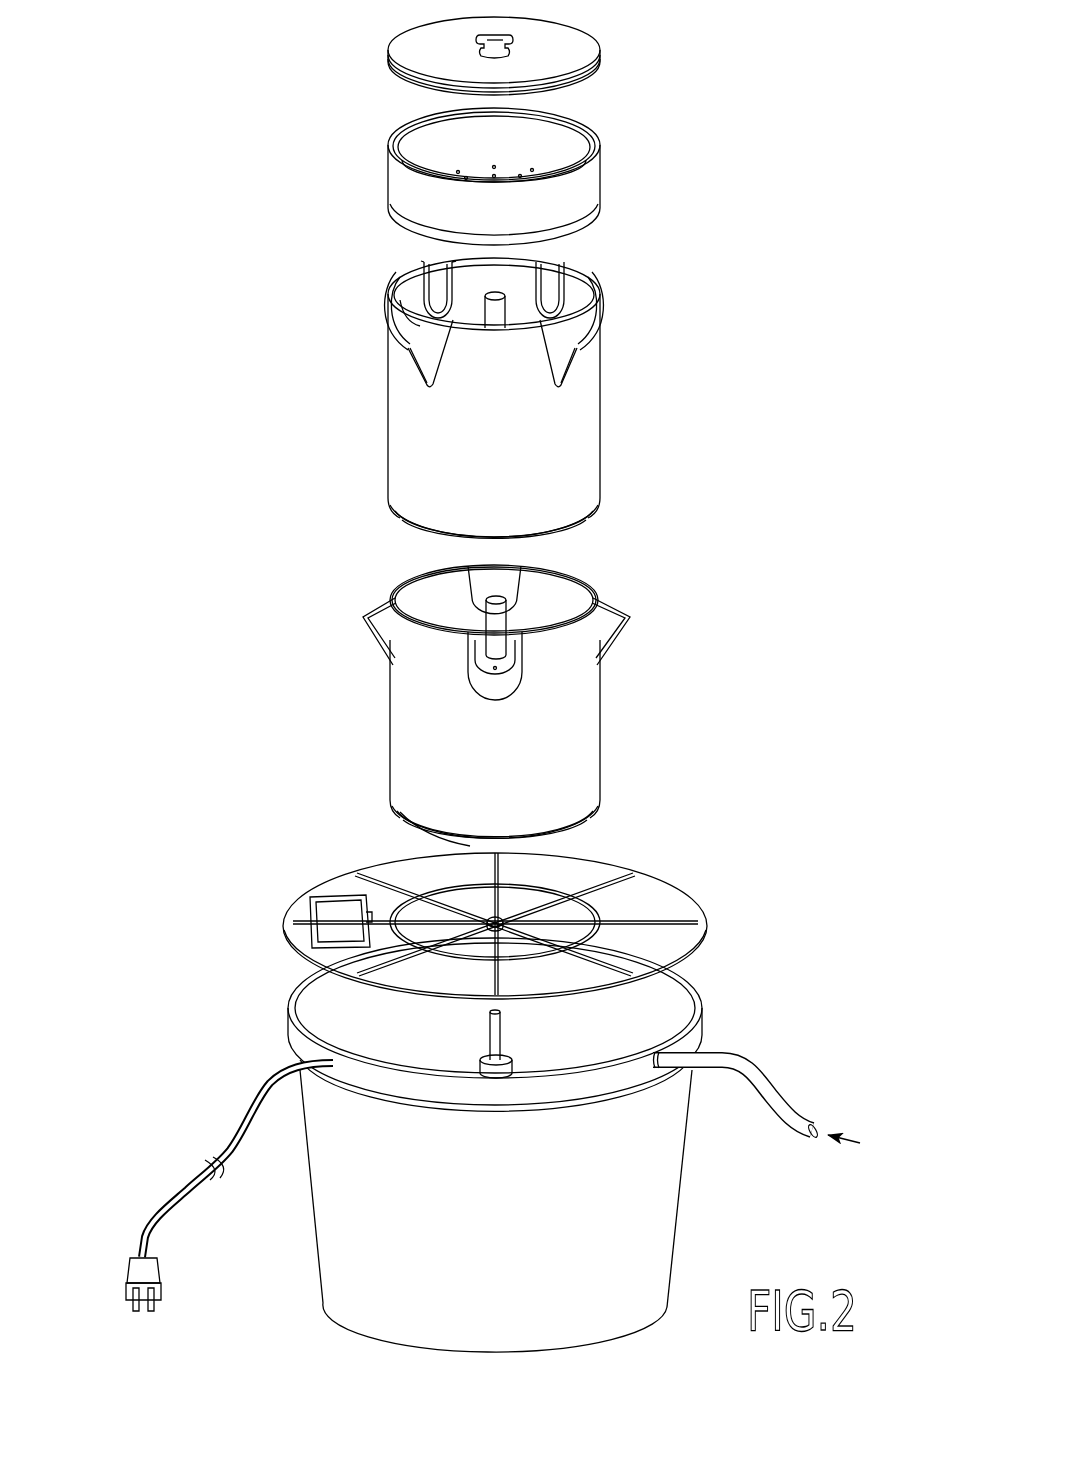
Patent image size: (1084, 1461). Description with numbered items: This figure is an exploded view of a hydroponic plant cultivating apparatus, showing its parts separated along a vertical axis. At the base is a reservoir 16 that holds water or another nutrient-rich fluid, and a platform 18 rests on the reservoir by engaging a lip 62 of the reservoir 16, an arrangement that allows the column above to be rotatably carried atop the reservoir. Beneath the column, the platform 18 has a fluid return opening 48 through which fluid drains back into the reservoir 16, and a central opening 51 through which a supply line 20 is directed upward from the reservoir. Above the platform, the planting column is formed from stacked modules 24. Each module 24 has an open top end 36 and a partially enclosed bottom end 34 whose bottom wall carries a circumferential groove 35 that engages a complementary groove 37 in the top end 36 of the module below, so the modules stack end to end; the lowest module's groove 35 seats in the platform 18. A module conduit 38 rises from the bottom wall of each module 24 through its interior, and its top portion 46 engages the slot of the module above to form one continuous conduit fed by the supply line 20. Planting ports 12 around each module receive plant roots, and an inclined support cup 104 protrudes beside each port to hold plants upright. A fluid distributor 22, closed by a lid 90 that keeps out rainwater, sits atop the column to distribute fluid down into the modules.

The planting port 12 is at (428, 328).
The reservoir 16 is at (627, 1182).
The platform 18 is at (690, 897).
The supply line 20 is at (502, 1043).
The fluid distributor 22 is at (598, 188).
The module 24 is at (588, 425).
The bottom end 34 is at (413, 818).
The circumferential groove 35 is at (573, 542).
The open top end 36 is at (393, 585).
The complementary groove 37 is at (397, 290).
The module conduit 38 is at (497, 308).
The top portion 46 is at (515, 285).
The fluid return opening 48 is at (535, 907).
The central opening 51 is at (490, 917).
The lip 62 is at (700, 992).
The lid 90 is at (588, 42).
The inclined support cup 104 is at (422, 363).